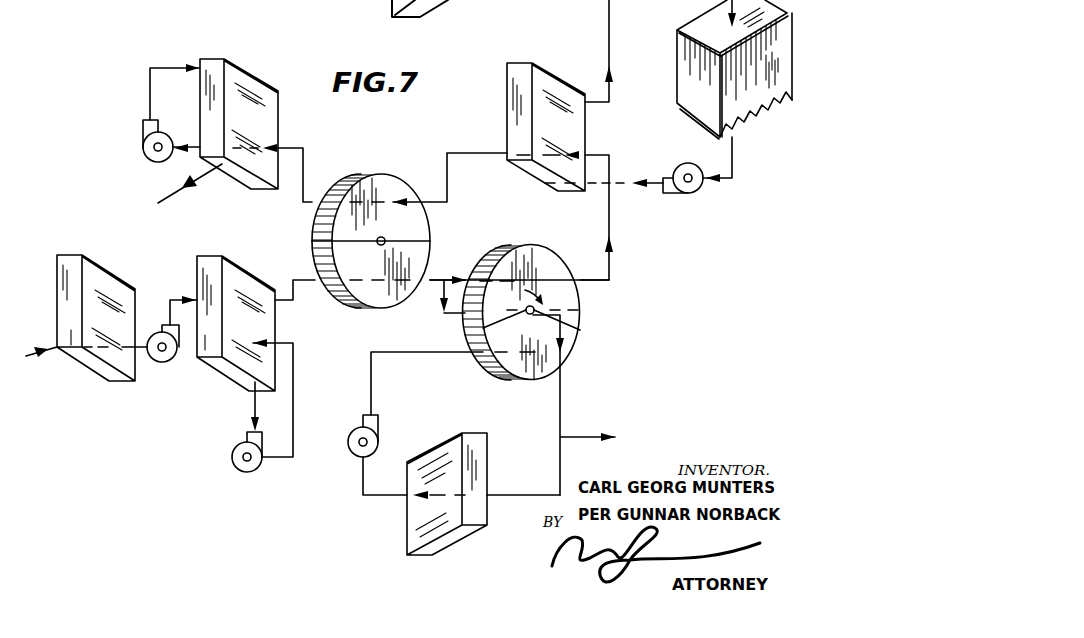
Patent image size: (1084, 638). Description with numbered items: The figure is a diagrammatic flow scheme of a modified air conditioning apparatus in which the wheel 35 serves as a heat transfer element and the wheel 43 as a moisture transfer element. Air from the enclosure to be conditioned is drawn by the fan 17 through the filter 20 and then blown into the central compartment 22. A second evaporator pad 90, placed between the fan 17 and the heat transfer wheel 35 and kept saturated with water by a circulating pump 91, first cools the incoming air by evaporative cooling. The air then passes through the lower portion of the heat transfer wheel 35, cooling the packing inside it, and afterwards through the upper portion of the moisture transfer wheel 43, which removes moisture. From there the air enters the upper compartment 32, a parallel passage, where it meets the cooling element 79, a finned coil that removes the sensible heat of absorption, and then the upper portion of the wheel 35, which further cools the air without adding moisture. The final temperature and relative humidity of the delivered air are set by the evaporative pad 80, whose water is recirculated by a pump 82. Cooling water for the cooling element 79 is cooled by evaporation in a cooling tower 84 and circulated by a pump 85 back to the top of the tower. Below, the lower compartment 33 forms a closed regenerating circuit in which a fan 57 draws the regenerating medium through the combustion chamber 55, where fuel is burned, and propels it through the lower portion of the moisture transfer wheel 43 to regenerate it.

The fan 17 is at (166, 366).
The filter 20 is at (113, 285).
The central compartment 22 is at (433, 279).
The upper compartment 32 is at (457, 152).
The lower compartment 33 is at (562, 397).
The heat transfer wheel 35 is at (328, 210).
The moisture transfer wheel 43 is at (531, 250).
The combustion chamber 55 is at (480, 514).
The fan 57 is at (378, 432).
The cooling element 79 is at (545, 78).
The evaporative pad 80 is at (268, 124).
The pump 82 is at (145, 151).
The cooling tower 84 is at (683, 68).
The pump 85 is at (672, 193).
The second evaporator pad 90 is at (245, 285).
The circulating pump 91 is at (252, 472).